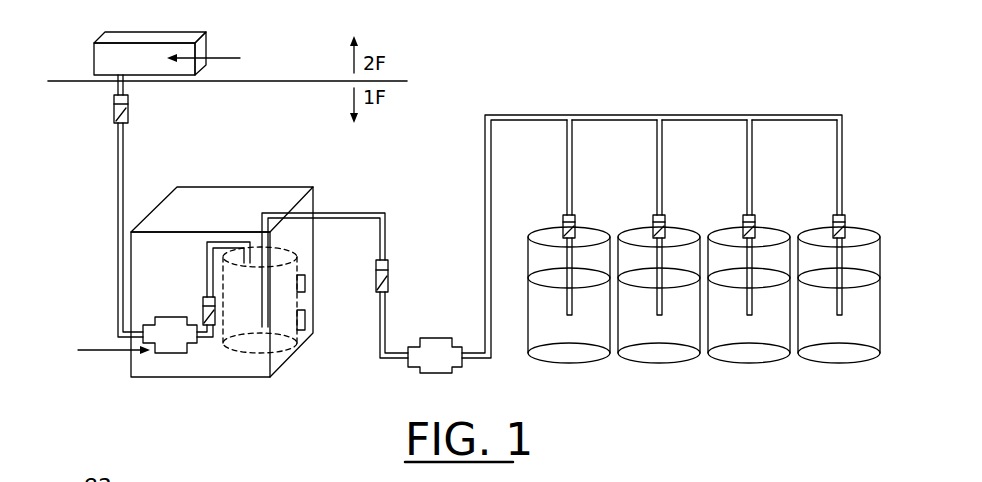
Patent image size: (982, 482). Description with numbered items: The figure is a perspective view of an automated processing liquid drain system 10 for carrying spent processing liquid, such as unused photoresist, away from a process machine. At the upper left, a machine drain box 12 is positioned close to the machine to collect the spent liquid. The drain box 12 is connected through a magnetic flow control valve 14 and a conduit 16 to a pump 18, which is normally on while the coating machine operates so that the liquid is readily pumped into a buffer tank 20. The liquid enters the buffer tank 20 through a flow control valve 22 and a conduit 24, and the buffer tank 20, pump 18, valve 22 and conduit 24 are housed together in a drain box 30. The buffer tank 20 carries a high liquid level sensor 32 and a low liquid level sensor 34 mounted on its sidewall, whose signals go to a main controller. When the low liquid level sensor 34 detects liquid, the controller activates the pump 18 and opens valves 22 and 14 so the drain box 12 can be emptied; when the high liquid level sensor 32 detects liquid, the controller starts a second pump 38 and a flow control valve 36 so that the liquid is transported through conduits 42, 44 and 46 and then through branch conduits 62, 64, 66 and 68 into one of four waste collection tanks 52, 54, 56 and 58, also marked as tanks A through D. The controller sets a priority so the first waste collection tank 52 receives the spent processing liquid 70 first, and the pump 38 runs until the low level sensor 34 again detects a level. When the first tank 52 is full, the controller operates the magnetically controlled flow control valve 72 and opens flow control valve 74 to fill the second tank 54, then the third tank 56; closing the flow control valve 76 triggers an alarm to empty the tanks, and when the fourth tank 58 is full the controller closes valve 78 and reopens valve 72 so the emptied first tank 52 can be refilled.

The automated processing liquid drain system 10 is at (481, 51).
The machine drain box 12 is at (203, 48).
The magnetic flow control valve 14 is at (128, 113).
The conduit 16 is at (118, 155).
The pump 18 is at (168, 355).
The buffer tank 20 is at (306, 243).
The flow control valve 22 is at (203, 307).
The conduit 24 is at (207, 262).
The drain box 30 is at (227, 175).
The high liquid level sensor 32 is at (307, 282).
The low liquid level sensor 34 is at (307, 317).
The flow control valve 36 is at (390, 271).
The pump 38 is at (427, 338).
The conduit 42 is at (348, 213).
The conduit 44 is at (388, 318).
The conduit 46 is at (485, 175).
The first waste collection tank 52 is at (589, 210).
The second waste collection tank 54 is at (681, 213).
The third waste collection tank 56 is at (771, 214).
The fourth waste collection tank 58 is at (861, 214).
The conduit 62 is at (565, 162).
The conduit 64 is at (662, 163).
The conduit 66 is at (753, 163).
The conduit 68 is at (843, 163).
The spent processing liquid 70 is at (533, 303).
The magnetically controlled flow control valve 72 is at (563, 222).
The flow control valve 74 is at (654, 222).
The flow control valve 76 is at (744, 224).
The valve 78 is at (835, 224).